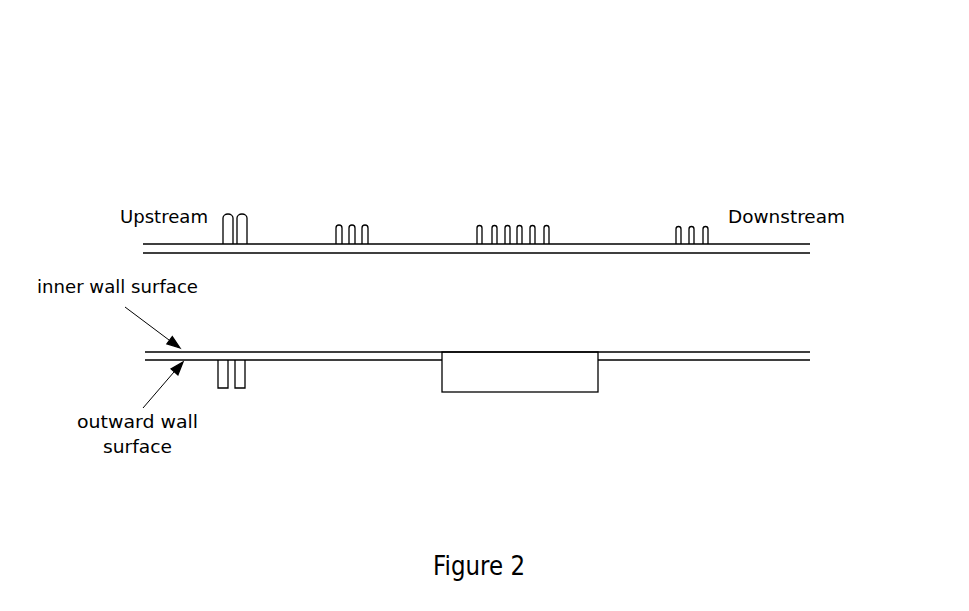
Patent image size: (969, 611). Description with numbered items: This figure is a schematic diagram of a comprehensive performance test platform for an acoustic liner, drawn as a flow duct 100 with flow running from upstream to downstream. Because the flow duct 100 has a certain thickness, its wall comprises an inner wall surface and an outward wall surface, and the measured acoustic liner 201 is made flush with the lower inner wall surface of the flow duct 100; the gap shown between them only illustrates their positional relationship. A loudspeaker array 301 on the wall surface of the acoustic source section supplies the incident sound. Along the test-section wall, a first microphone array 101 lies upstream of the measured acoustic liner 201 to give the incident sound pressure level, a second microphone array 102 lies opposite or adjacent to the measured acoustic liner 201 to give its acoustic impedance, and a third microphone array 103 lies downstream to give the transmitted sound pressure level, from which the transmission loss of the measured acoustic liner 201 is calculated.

The flow duct 100 is at (476, 262).
The first microphone array 101 is at (352, 223).
The second microphone array 102 is at (508, 223).
The third microphone array 103 is at (694, 222).
The measured acoustic liner 201 is at (520, 372).
The loudspeaker array 301 is at (243, 388).